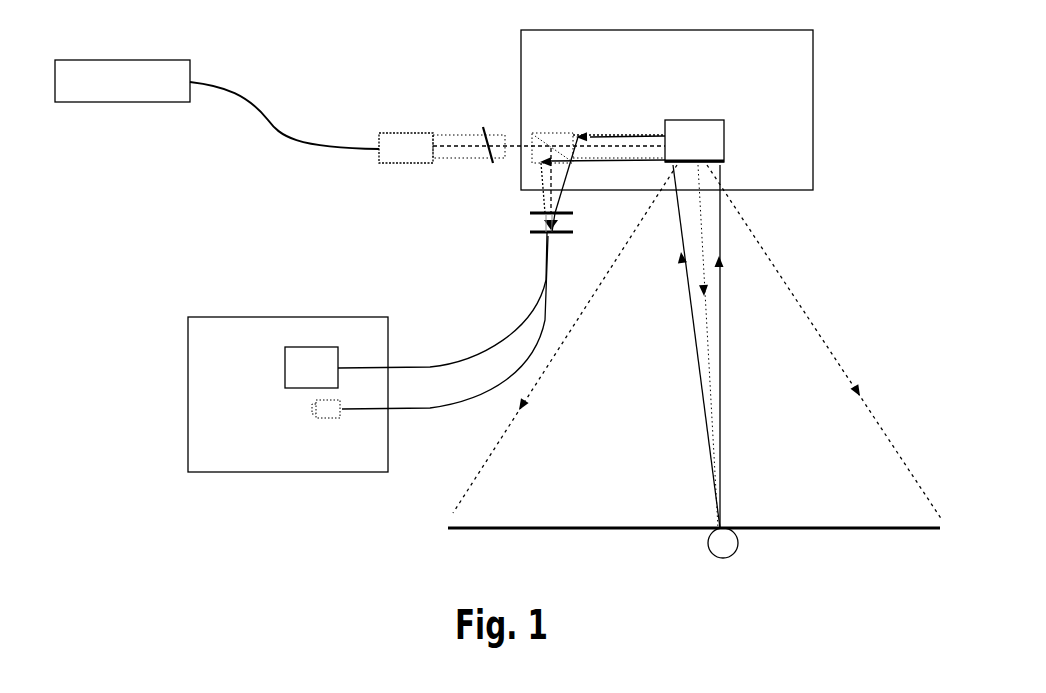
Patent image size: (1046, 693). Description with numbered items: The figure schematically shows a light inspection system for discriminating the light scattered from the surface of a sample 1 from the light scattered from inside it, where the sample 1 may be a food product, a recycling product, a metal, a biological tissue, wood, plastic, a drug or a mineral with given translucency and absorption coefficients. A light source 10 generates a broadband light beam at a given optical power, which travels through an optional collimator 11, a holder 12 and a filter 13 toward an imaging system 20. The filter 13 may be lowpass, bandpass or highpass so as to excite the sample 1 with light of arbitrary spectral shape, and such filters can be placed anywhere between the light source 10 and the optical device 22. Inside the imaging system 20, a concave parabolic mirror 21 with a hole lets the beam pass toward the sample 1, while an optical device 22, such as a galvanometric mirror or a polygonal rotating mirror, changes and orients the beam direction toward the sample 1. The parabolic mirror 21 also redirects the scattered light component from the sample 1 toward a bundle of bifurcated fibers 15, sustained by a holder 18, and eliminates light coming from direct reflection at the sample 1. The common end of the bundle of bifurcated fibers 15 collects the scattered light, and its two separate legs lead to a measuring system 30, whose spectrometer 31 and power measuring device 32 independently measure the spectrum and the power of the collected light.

The sample 1 is at (738, 550).
The light source 10 is at (145, 60).
The collimator 11 is at (410, 157).
The holder 12 is at (457, 135).
The filter 13 is at (484, 127).
The bundle of bifurcated fibers 15 is at (553, 234).
The holder 18 is at (532, 232).
The imaging system 20 is at (818, 33).
The parabolic mirror 21 is at (548, 133).
The optical device 22 is at (730, 145).
The measuring system 30 is at (188, 378).
The spectrometer 31 is at (285, 388).
The power measuring device 32 is at (313, 412).